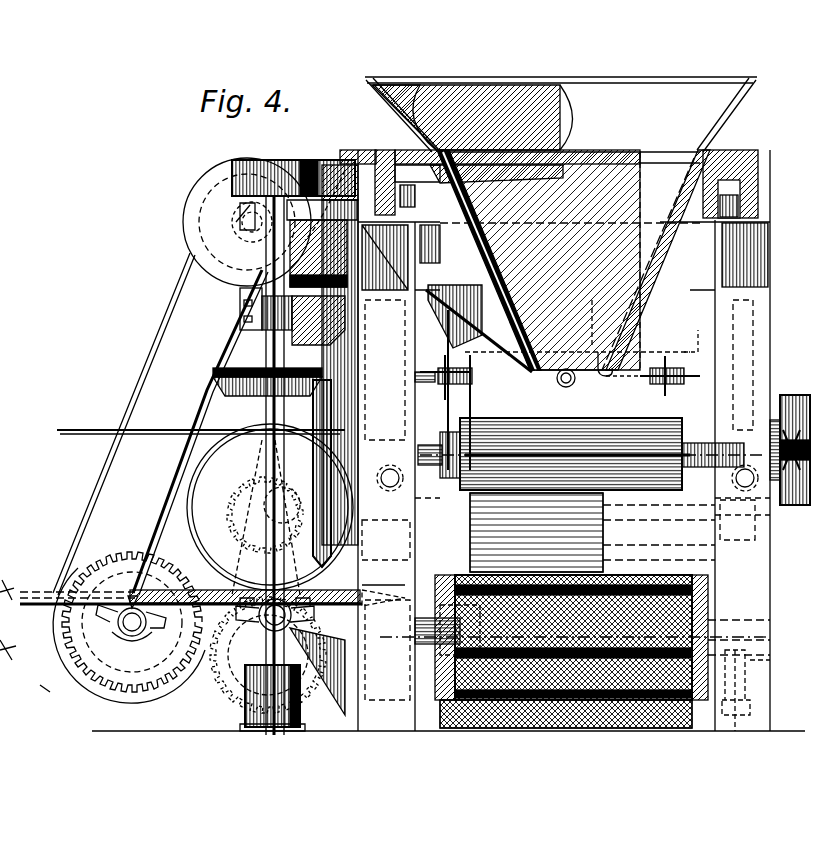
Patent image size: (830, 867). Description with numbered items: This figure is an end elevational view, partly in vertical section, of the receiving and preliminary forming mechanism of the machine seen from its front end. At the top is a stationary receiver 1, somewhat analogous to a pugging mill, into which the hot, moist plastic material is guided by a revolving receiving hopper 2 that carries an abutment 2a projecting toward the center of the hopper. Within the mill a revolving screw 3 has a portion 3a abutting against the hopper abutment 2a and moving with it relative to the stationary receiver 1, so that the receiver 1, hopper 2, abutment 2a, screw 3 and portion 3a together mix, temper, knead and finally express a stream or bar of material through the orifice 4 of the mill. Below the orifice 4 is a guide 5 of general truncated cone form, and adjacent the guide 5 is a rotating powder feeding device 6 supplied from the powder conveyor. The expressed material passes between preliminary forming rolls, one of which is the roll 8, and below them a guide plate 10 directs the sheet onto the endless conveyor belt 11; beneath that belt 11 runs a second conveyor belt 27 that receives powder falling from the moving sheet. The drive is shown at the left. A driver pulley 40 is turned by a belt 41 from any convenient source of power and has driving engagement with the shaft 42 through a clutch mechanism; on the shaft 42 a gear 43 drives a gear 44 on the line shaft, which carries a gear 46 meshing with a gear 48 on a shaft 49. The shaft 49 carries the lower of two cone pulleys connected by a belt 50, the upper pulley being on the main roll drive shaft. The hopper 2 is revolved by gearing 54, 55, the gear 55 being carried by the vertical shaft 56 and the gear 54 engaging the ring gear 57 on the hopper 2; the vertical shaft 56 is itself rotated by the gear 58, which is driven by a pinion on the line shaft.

The stationary receiver 1 is at (668, 253).
The revolving receiving hopper 2 is at (397, 162).
The abutment 2a is at (470, 128).
The revolving screw 3 is at (500, 200).
The screw portion 3a is at (565, 170).
The orifice 4 is at (593, 340).
The guide 5 is at (608, 376).
The rotating powder feeding device 6 is at (490, 360).
The preliminary forming roll 8 is at (555, 420).
The guide plate 10 is at (592, 532).
The endless conveyor belt 11 is at (575, 651).
The second conveyor belt 27 is at (715, 690).
The driver pulley 40 is at (225, 500).
The belt 41 is at (92, 430).
The shaft 42 is at (283, 505).
The gear 43 is at (255, 514).
The gear 44 is at (218, 680).
The gear 46 is at (312, 731).
The gear 48 is at (108, 688).
The shaft 49 is at (132, 636).
The belt 50 is at (160, 424).
The gear 54 is at (355, 165).
The gear 55 is at (238, 165).
The vertical shaft 56 is at (258, 347).
The ring gear 57 is at (358, 150).
The gear 58 is at (378, 590).